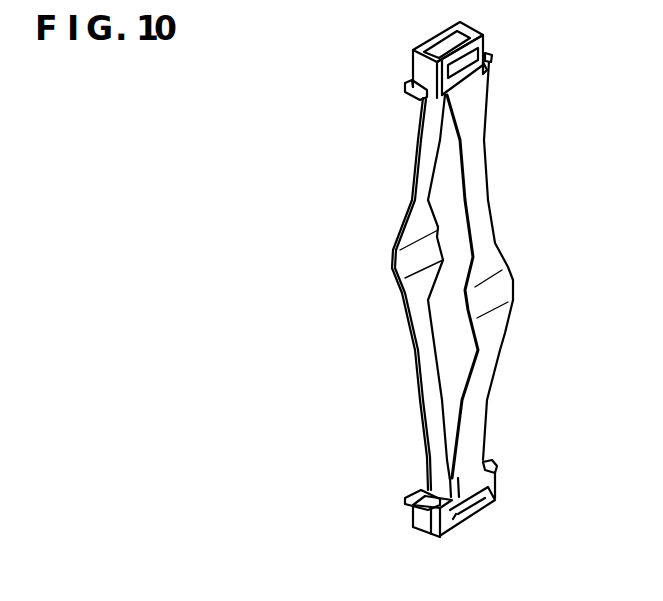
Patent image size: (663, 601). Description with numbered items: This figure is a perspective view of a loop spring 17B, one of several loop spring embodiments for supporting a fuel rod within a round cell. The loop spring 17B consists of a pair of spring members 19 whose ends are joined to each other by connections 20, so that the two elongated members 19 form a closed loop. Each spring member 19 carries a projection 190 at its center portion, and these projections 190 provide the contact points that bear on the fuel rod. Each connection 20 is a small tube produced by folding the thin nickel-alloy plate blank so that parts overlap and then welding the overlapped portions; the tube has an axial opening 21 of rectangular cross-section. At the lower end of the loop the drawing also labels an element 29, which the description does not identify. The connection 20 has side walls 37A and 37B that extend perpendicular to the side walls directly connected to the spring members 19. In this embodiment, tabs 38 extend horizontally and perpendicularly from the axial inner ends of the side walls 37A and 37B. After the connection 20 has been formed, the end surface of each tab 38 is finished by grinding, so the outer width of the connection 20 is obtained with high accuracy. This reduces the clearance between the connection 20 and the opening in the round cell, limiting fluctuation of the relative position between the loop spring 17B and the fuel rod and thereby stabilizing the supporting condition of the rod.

The loop spring 17B is at (372, 392).
The spring member 19 is at (410, 190).
The projection 190 is at (393, 262).
The connection 20 is at (490, 58).
The axial opening 21 is at (447, 43).
The lower connector block 29 is at (477, 517).
The side wall 37A is at (482, 33).
The side wall 37B is at (418, 68).
The tab 38 is at (413, 103).